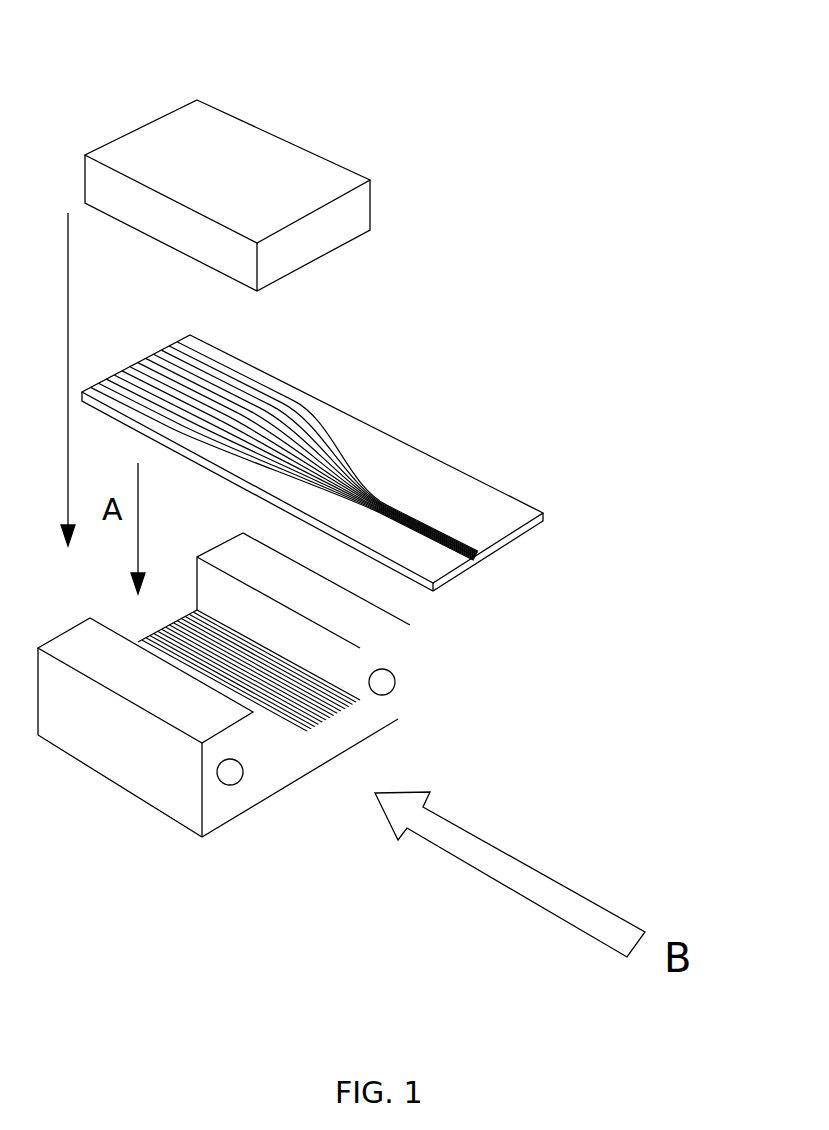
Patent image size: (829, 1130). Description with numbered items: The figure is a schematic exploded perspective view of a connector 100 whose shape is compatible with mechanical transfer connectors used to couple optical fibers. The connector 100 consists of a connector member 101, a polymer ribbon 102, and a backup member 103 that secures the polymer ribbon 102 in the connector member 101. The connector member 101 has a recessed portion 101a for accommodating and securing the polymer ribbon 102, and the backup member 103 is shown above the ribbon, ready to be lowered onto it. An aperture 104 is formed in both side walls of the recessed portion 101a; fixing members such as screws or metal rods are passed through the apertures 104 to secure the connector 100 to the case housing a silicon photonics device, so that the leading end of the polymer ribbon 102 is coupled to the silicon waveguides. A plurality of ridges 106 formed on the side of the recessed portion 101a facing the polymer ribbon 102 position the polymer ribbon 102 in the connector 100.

The connector 100 is at (743, 40).
The connector member 101 is at (402, 647).
The recessed portion 101a is at (218, 593).
The polymer ribbon 102 is at (500, 506).
The backup member 103 is at (358, 213).
The aperture 104 is at (223, 781).
The ridges 106 is at (335, 715).